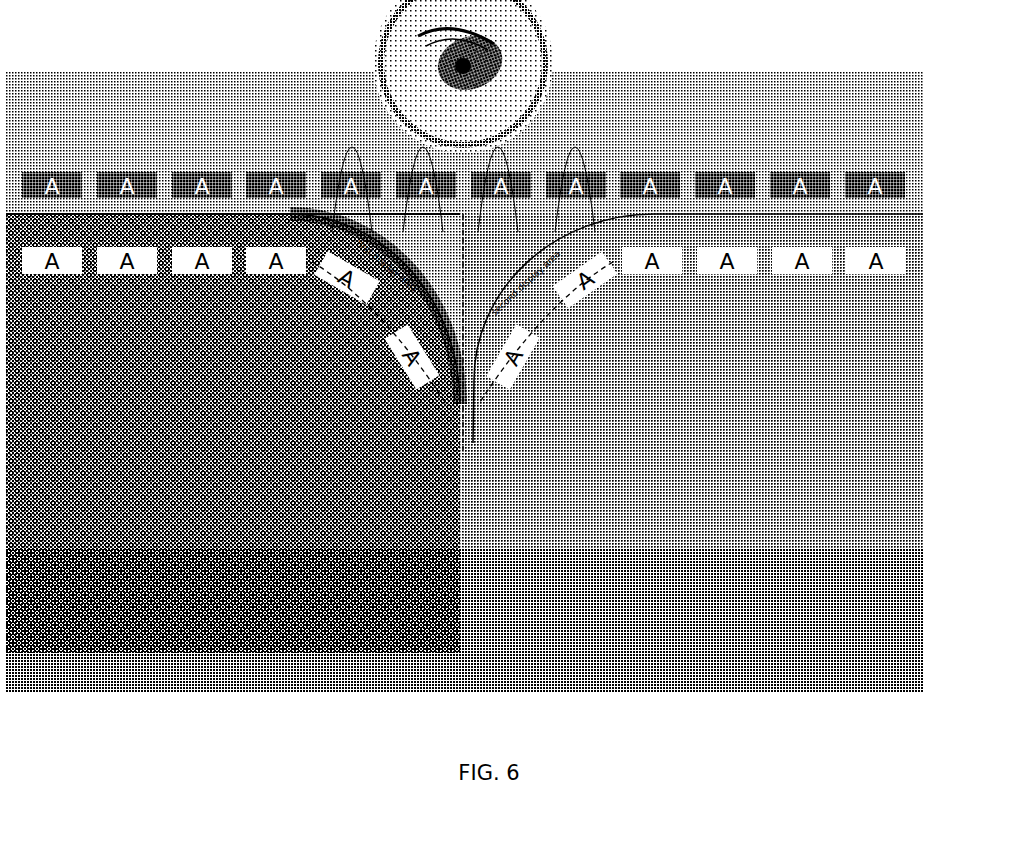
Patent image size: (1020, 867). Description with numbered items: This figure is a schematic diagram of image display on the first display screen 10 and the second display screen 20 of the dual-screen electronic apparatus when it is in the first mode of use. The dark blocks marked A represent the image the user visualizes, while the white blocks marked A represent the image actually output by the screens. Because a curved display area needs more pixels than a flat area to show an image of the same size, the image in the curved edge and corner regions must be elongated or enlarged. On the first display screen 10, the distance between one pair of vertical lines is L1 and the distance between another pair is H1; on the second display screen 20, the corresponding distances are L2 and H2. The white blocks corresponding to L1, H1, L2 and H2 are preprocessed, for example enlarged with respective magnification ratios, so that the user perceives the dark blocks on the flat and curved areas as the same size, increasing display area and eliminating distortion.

The first display screen 10 is at (233, 433).
The second display screen 20 is at (693, 381).
The distance between a pair of vertical lines L1 is at (352, 182).
The distance between another pair of vertical lines H1 is at (423, 182).
The distance between another pair of vertical lines H2 is at (498, 182).
The distance between a pair of vertical lines L2 is at (575, 182).